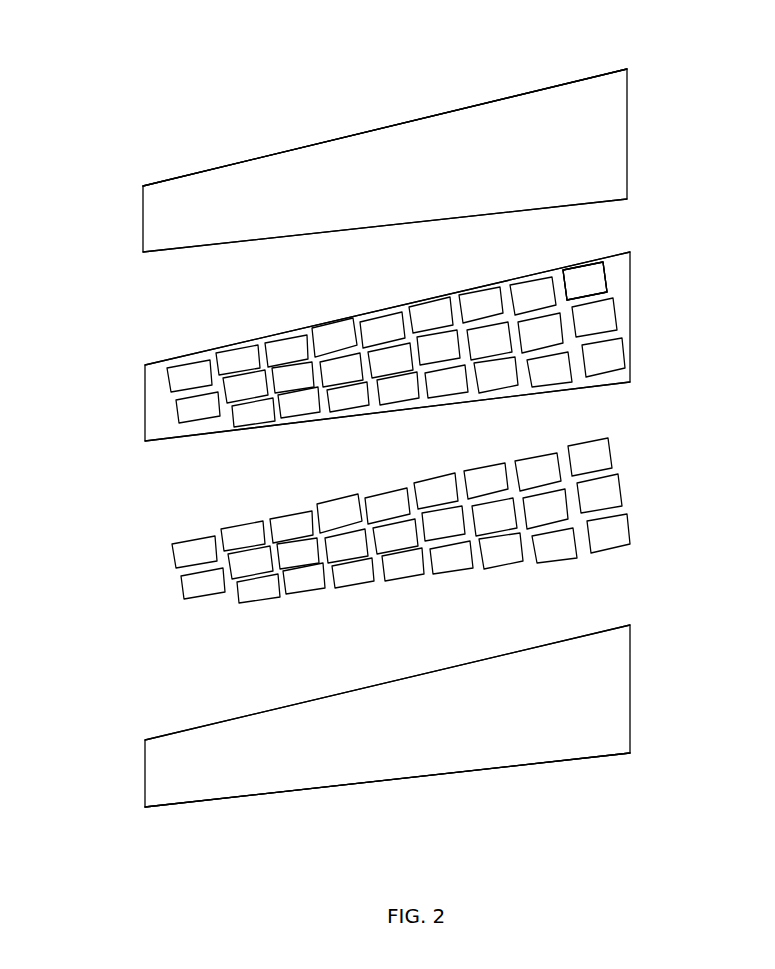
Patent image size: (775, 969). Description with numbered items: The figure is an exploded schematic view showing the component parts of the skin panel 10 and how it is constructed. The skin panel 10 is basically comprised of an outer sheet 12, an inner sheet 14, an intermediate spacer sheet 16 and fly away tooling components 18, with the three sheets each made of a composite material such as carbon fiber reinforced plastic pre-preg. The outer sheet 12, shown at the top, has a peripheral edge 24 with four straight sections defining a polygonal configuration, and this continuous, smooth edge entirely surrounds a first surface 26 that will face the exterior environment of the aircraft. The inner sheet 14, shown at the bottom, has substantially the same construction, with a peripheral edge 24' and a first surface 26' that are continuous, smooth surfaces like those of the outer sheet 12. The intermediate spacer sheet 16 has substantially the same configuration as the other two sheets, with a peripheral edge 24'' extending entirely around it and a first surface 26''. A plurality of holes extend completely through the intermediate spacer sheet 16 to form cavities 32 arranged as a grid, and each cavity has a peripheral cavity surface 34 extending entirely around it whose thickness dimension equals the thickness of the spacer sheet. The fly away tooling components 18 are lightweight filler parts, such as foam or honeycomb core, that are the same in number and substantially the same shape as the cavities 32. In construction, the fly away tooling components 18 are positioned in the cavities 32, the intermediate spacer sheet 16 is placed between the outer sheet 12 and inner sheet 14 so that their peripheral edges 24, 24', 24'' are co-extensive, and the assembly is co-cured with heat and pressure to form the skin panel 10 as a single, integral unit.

The skin panel 10 is at (565, 52).
The outer sheet 12 is at (348, 130).
The inner sheet 14 is at (178, 807).
The intermediate spacer sheet 16 is at (170, 442).
The fly away tooling components 18 is at (633, 478).
The peripheral edge 24 is at (385, 251).
The first surface 26 is at (373, 127).
The peripheral edge 24' is at (387, 814).
The first surface 26' is at (387, 683).
The peripheral edge 24'' is at (387, 441).
The first surface 26'' is at (345, 320).
The cavities 32 is at (590, 285).
The peripheral cavity surface 34 is at (570, 288).